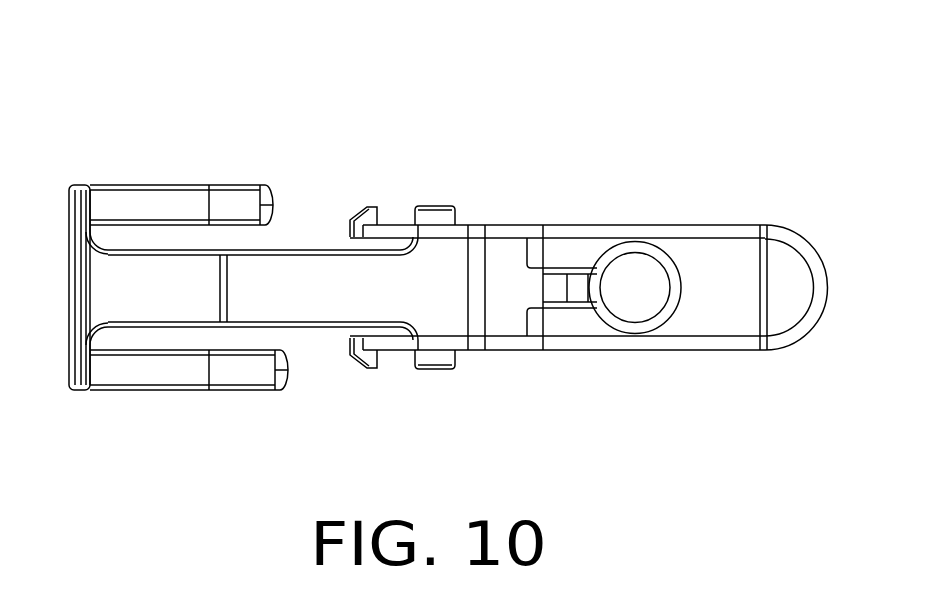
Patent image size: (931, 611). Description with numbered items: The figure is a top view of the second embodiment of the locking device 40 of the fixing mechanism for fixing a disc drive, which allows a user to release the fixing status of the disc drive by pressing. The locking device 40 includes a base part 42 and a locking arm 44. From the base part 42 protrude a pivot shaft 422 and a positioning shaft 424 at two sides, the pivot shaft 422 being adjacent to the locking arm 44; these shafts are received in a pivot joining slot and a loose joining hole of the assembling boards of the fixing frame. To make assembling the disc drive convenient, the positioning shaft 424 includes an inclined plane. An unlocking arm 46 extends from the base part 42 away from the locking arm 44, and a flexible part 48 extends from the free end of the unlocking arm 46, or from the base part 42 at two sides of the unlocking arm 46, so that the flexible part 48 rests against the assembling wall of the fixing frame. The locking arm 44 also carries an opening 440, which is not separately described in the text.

The locking device 40 is at (847, 62).
The base part 42 is at (457, 262).
The locking arm 44 is at (733, 262).
The hole 440 is at (633, 270).
The unlocking arm 46 is at (310, 283).
The flexible part 48 is at (147, 202).
The pivot shaft 422 is at (438, 203).
The positioning shaft 424 is at (360, 208).